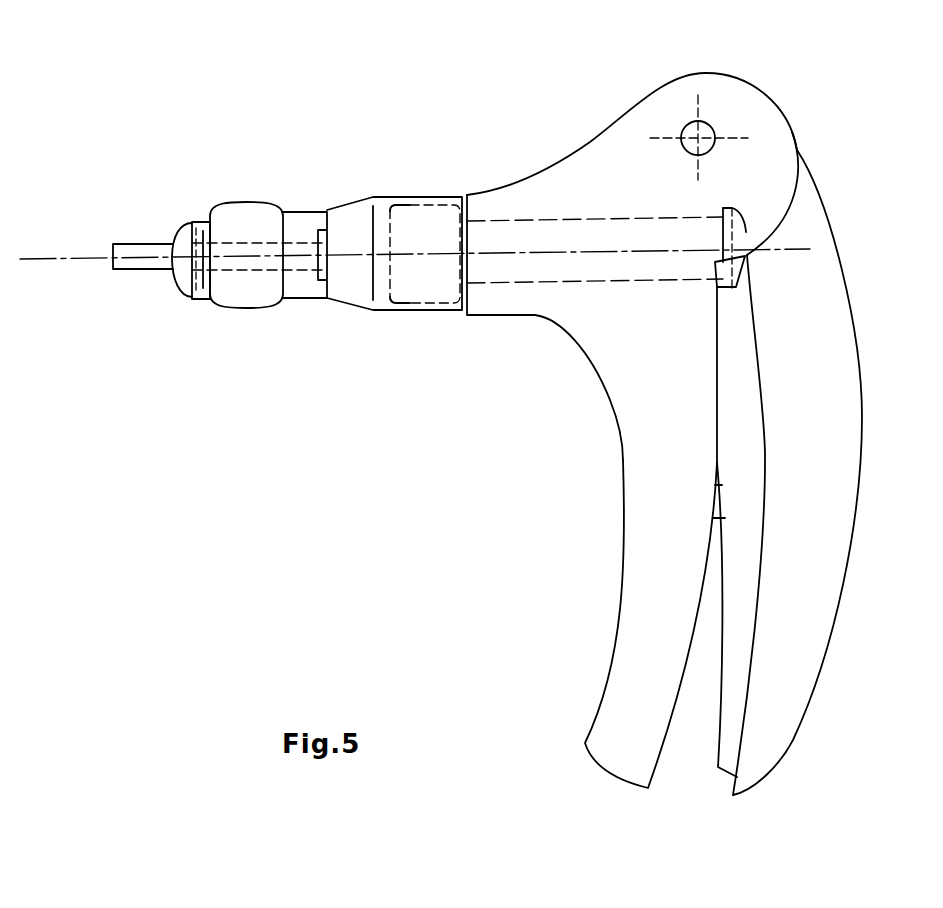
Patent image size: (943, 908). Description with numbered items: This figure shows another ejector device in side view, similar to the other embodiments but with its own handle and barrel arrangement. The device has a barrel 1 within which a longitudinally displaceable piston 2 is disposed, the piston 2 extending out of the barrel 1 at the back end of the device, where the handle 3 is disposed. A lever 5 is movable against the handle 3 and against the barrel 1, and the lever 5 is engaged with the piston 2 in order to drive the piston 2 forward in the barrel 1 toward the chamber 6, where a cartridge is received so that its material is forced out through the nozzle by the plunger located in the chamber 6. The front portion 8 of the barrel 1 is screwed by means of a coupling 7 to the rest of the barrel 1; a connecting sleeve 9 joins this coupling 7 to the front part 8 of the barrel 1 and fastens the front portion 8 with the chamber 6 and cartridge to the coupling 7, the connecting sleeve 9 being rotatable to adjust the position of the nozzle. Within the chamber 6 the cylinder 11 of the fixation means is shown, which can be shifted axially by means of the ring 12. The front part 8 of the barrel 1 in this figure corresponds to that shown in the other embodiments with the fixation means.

The barrel 1 is at (503, 179).
The piston 2 is at (152, 250).
The handle 3 is at (635, 609).
The lever 5 is at (823, 608).
The chamber 6 is at (205, 221).
The coupling 7 is at (422, 290).
The front portion of the barrel 8 is at (186, 290).
The connecting sleeve 9 is at (353, 287).
The cylinder 11 is at (204, 288).
The ring 12 is at (245, 287).